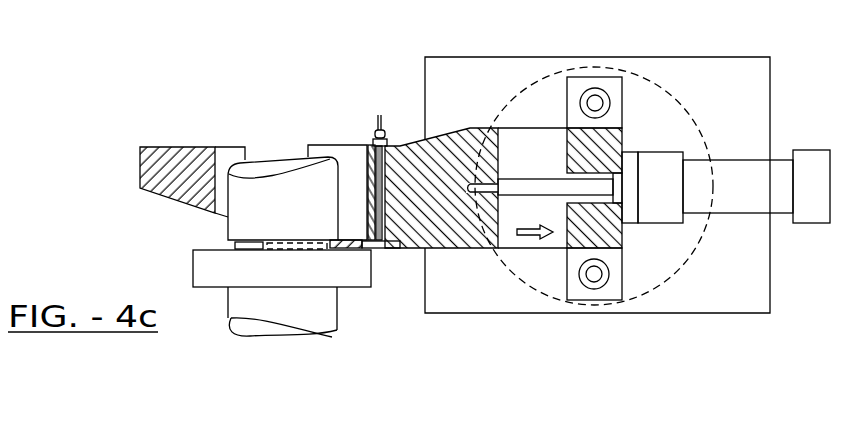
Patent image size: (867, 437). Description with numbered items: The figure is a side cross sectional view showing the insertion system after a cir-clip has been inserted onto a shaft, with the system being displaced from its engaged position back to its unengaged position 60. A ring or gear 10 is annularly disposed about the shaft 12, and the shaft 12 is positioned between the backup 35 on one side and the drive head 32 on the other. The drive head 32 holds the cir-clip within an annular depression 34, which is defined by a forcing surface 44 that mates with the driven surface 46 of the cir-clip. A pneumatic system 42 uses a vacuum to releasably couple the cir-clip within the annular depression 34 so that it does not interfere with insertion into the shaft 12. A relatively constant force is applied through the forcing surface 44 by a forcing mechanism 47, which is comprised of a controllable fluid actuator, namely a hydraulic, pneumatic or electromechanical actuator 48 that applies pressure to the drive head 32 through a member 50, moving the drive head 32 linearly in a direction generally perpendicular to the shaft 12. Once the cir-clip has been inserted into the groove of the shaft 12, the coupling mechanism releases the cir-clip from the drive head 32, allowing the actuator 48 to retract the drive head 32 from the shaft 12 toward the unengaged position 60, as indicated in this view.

The ring or gear 10 is at (375, 250).
The shaft 12 is at (320, 330).
The drive head 32 is at (408, 143).
The annular depression 34 is at (388, 250).
The backup 35 is at (183, 148).
The pneumatic system 42 is at (380, 116).
The forcing surface 44 is at (407, 250).
The driven surface 46 is at (363, 249).
The forcing mechanism 47 is at (658, 112).
The actuator 48 is at (778, 167).
The member 50 is at (533, 187).
The unengaged position 60 is at (325, 124).